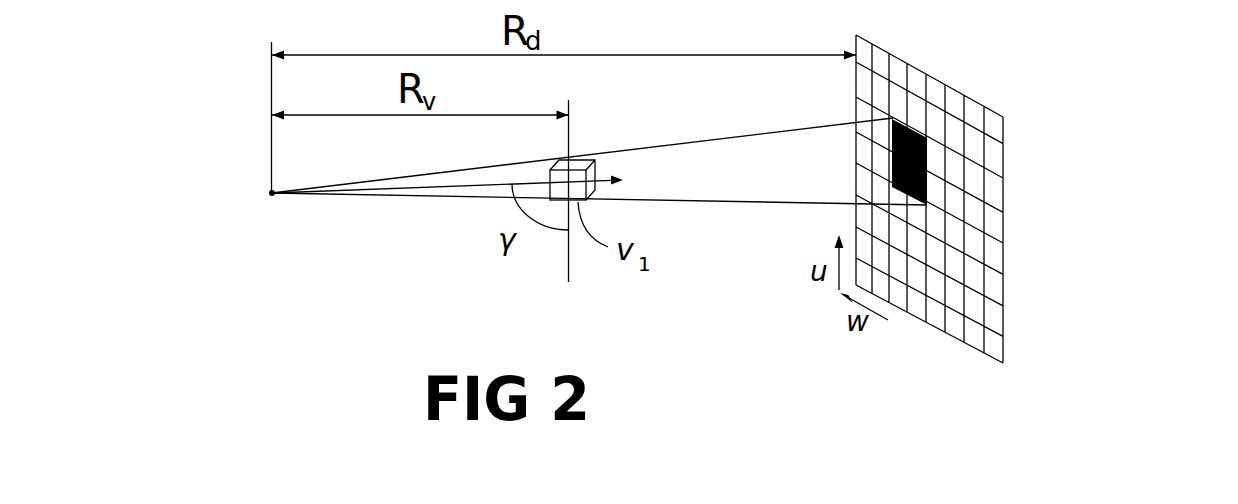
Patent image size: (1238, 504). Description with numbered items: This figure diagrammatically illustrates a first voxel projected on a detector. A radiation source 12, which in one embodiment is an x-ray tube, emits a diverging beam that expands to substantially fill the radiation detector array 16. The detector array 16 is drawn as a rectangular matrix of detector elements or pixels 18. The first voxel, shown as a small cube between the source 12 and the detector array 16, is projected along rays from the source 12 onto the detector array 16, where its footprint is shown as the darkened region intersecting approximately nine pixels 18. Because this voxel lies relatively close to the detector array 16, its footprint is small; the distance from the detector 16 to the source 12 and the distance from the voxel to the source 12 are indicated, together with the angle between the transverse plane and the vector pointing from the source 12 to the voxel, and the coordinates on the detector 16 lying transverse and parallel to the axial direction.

The radiation source 12 is at (272, 193).
The radiation detector array 16 is at (1095, 117).
The detector elements 18 is at (990, 222).